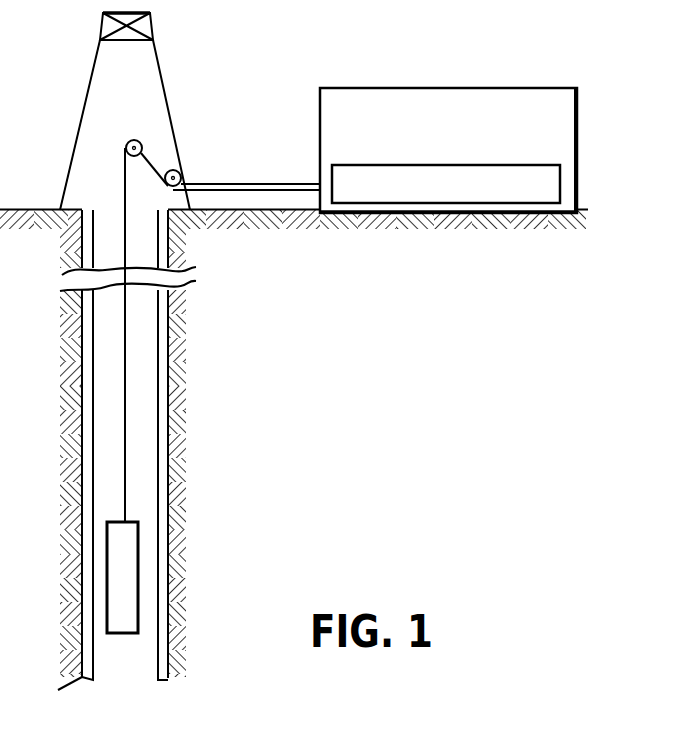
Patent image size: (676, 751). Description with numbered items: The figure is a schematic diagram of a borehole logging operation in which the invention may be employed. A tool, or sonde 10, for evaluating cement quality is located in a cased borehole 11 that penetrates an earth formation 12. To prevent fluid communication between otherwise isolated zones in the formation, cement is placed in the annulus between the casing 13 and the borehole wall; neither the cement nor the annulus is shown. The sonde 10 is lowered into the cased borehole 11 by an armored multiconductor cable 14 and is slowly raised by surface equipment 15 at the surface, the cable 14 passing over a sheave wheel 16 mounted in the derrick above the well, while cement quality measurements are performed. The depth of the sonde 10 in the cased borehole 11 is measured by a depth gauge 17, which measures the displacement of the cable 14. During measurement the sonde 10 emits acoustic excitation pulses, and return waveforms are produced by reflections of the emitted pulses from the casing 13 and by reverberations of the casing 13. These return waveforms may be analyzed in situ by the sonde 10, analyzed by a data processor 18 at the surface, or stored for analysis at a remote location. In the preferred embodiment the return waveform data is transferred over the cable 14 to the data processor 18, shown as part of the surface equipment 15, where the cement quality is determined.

The sonde 10 is at (118, 636).
The cased borehole 11 is at (143, 337).
The earth formation 12 is at (180, 390).
The casing 13 is at (162, 462).
The armored multiconductor cable 14 is at (125, 197).
The surface equipment 15 is at (516, 100).
The sheave wheel 16 is at (132, 140).
The depth gauge 17 is at (181, 168).
The data processor 18 is at (562, 181).